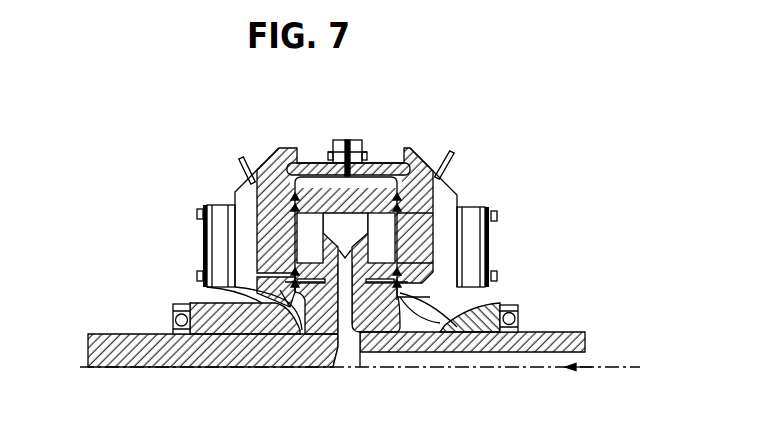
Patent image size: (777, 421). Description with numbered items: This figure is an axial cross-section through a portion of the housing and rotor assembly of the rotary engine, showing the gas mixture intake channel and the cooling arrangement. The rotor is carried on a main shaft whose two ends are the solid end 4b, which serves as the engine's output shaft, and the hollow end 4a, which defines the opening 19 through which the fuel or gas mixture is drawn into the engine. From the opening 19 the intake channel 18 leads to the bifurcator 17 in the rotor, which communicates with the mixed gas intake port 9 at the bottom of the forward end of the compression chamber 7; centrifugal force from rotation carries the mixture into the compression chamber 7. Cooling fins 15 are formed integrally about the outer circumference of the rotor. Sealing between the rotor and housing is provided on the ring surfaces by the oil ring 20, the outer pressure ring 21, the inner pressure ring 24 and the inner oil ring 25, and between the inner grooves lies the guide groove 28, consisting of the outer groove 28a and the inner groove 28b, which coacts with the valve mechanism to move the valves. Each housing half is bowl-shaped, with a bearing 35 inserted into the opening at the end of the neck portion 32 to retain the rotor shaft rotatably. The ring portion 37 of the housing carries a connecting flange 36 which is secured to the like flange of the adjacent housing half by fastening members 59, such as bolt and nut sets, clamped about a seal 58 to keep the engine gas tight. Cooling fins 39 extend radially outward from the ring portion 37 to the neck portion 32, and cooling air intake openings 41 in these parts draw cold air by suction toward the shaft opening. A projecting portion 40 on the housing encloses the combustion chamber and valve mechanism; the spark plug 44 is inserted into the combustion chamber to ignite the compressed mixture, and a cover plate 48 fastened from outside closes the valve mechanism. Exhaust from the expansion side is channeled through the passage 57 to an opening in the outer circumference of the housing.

The end of main shaft 4a is at (545, 340).
The end of main shaft 4b is at (120, 340).
The compression chamber 7 is at (402, 215).
The mixed gas intake port 9 is at (405, 228).
The cooling fins 15 is at (320, 183).
The bifurcator 17 is at (415, 246).
The intake channel 18 is at (350, 327).
The opening 19 is at (590, 365).
The oil ring 20 is at (400, 193).
The outer pressure ring 21 is at (399, 205).
The inner pressure ring 24 is at (420, 263).
The inner oil ring 25 is at (505, 306).
The guide groove 28 is at (490, 270).
The outer groove 28a is at (205, 245).
The inner groove 28b is at (225, 277).
The neck portion 32 is at (235, 303).
The bearing 35 is at (174, 320).
The connecting flange 36 is at (333, 168).
The ring portion 37 is at (265, 220).
The cooling fins 39 is at (275, 160).
The projecting portions 40 is at (210, 236).
The cooling air intake openings 41 is at (262, 305).
The spark plug 44 is at (241, 157).
The cover plate 48 is at (205, 260).
The passage 57 is at (408, 150).
The seal 58 is at (348, 140).
The fastening members 59 is at (372, 160).